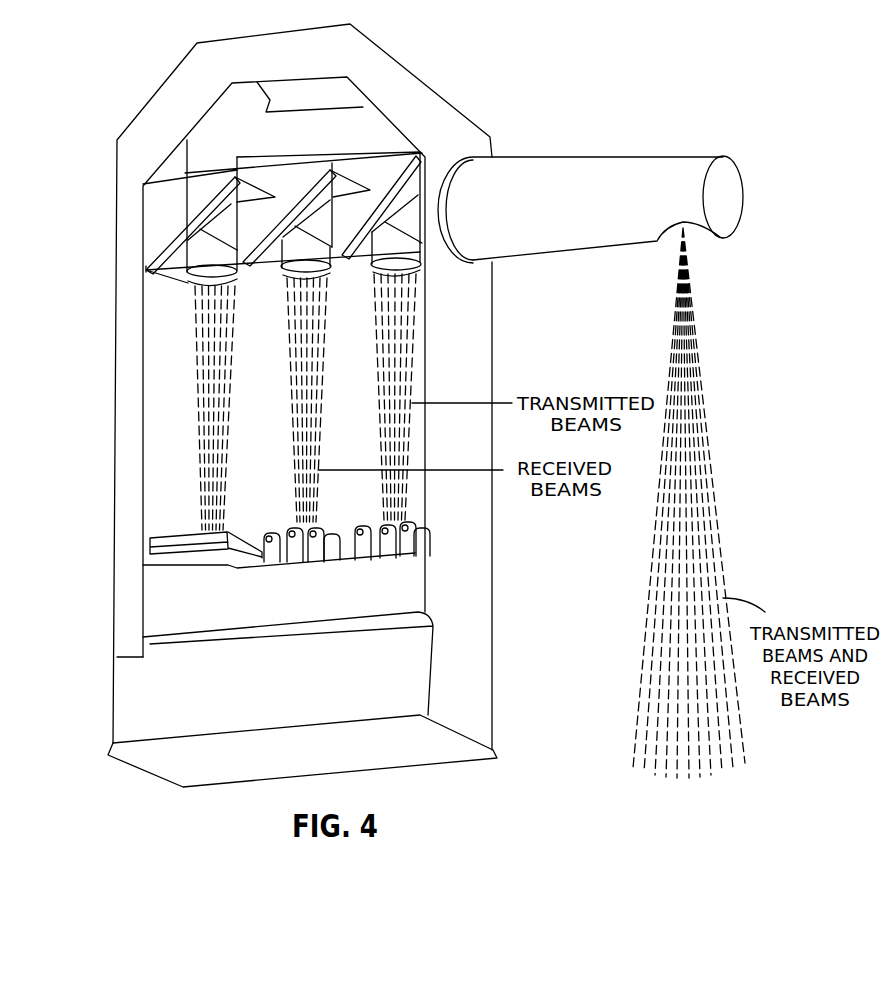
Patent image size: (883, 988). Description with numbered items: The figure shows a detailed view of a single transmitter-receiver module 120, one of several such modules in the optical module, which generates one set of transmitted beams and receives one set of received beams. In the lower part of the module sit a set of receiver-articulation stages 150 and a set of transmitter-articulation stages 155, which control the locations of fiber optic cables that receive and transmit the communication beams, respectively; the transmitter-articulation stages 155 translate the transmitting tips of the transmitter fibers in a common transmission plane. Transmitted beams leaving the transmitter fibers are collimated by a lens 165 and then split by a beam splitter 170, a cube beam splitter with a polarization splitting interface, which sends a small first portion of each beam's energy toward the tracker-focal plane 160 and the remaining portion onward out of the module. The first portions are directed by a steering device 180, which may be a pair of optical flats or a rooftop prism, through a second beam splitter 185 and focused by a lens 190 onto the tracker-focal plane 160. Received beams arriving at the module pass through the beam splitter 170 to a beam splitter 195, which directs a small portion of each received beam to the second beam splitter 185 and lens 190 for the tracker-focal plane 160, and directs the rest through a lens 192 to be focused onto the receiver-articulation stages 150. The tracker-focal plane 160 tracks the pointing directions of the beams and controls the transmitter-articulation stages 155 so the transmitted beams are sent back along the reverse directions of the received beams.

The transmitter-receiver module 120 is at (126, 66).
The beam splitter 170 is at (402, 188).
The second beam splitter 185 is at (253, 192).
The beam splitter 195 is at (338, 183).
The lens 190 is at (187, 283).
The lens 192 is at (283, 279).
The lens 165 is at (393, 280).
The steering device 180 is at (507, 33).
The tracker-focal plane 160 is at (197, 560).
The set of receiver-articulation stages 150 is at (290, 565).
The set of transmitter-articulation stages 155 is at (390, 553).